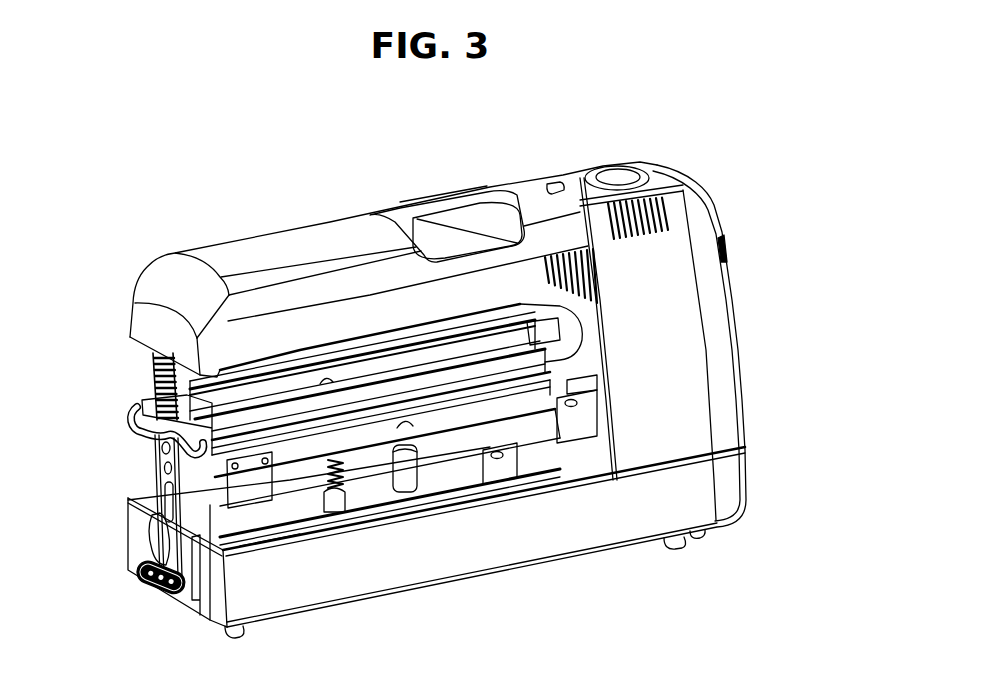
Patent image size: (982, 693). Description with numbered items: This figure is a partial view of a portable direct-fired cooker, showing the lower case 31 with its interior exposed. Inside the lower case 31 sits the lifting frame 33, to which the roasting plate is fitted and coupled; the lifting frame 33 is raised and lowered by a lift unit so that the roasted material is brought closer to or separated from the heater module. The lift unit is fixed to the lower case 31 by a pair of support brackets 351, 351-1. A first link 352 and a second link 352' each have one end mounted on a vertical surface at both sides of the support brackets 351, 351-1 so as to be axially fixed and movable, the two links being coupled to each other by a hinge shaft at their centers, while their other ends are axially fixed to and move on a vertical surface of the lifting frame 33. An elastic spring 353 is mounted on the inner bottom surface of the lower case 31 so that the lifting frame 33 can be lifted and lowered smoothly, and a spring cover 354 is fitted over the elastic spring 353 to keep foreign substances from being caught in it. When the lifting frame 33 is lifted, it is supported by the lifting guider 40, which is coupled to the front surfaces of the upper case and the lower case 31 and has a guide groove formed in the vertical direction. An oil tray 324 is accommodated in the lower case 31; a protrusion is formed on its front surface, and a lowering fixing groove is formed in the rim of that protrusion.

The lower case 31 is at (587, 527).
The lifting frame 33 is at (358, 428).
The lifting guider 40 is at (160, 462).
The oil tray 324 is at (283, 528).
The support bracket 351 is at (165, 505).
The right bracket 351-1 is at (580, 420).
The first link 352 is at (115, 383).
The second link 352' is at (131, 430).
The elastic spring 353 is at (345, 488).
The spring cover 354 is at (407, 468).